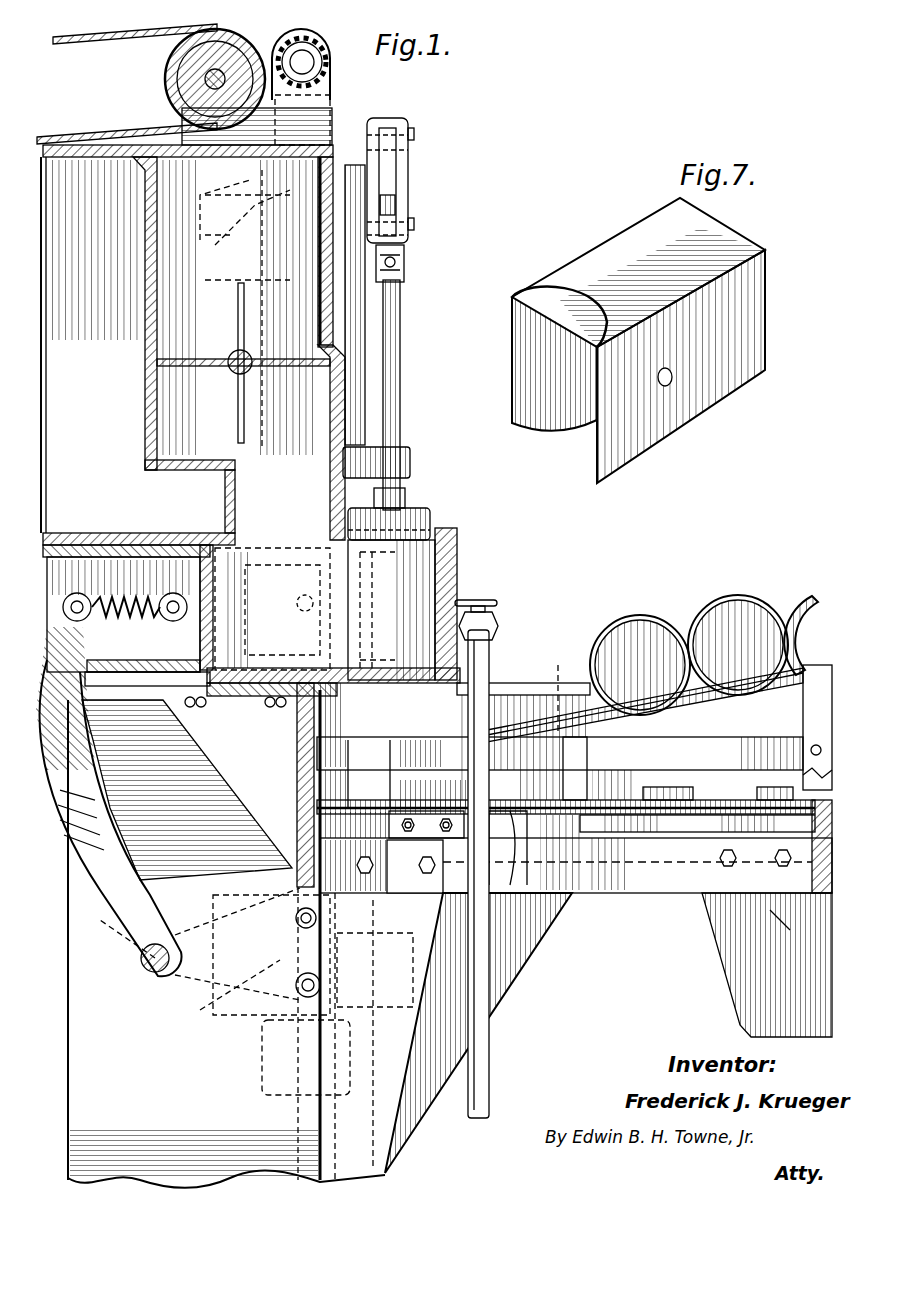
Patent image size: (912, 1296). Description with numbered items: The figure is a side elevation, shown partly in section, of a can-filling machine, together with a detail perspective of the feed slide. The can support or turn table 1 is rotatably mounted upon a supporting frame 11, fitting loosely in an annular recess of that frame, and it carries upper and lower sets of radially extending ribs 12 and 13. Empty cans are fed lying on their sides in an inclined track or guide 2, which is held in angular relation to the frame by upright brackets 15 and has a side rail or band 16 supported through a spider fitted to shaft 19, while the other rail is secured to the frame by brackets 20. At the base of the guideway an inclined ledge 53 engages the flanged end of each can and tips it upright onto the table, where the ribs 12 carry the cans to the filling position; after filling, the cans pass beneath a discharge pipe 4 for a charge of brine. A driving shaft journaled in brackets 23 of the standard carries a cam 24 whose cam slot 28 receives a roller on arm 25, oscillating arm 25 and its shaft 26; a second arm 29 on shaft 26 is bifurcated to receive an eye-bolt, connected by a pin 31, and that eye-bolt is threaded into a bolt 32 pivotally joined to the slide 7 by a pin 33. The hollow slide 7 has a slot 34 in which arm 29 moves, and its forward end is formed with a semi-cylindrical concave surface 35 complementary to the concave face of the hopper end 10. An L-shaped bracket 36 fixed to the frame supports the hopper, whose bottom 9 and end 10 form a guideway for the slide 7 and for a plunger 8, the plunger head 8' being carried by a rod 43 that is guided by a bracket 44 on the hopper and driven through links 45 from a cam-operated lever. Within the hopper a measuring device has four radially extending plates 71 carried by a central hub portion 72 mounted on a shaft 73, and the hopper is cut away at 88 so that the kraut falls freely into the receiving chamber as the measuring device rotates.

In FIG. 1, the can support or turn table 1 is at (620, 800).
In FIG. 1, the track or guide 2 is at (520, 604).
In FIG. 1, the discharge pipe 4 is at (492, 632).
In FIG. 1, the slide 7 is at (230, 650).
In FIG. 7, the slide 7 is at (612, 255).
In FIG. 1, the plunger 8 is at (408, 263).
In FIG. 1, the plunger head 8' is at (408, 522).
In FIG. 1, the bottom of the hopper 9 is at (275, 708).
In FIG. 1, the end of the hopper 10 is at (457, 578).
In FIG. 1, the supporting frame 11 is at (655, 870).
In FIG. 1, the upper set of ribs 12 is at (680, 786).
In FIG. 1, the lower set of ribs 13 is at (700, 832).
In FIG. 1, the upright brackets 15 is at (803, 718).
In FIG. 1, the side rail or band 16 is at (514, 735).
In FIG. 1, the shaft 19 is at (560, 891).
In FIG. 1, the brackets 20 is at (600, 752).
In FIG. 1, the brackets 23 is at (262, 1074).
In FIG. 1, the cam 24 is at (255, 1012).
In FIG. 1, the arm 25 is at (215, 985).
In FIG. 1, the shaft 26 is at (140, 965).
In FIG. 1, the cam slot 28 is at (370, 920).
In FIG. 1, the arm 29 is at (98, 922).
In FIG. 1, the pin 31 is at (90, 545).
In FIG. 1, the bolt 32 is at (87, 622).
In FIG. 1, the pin 33 is at (139, 622).
In FIG. 1, the slot 34 is at (108, 801).
In FIG. 7, the semi-cylindrical concave surface 35 is at (560, 410).
In FIG. 1, the L-shaped bracket 36 is at (265, 822).
In FIG. 1, the rod 43 is at (400, 340).
In FIG. 1, the bracket 44 is at (410, 462).
In FIG. 1, the links 45 is at (408, 157).
In FIG. 1, the inclined ledge 53 is at (566, 725).
In FIG. 1, the radially extending plates 71 is at (150, 350).
In FIG. 1, the central hub portion 72 is at (246, 352).
In FIG. 1, the shaft 73 is at (245, 372).
In FIG. 1, the cut-away of the hopper 88 is at (350, 378).